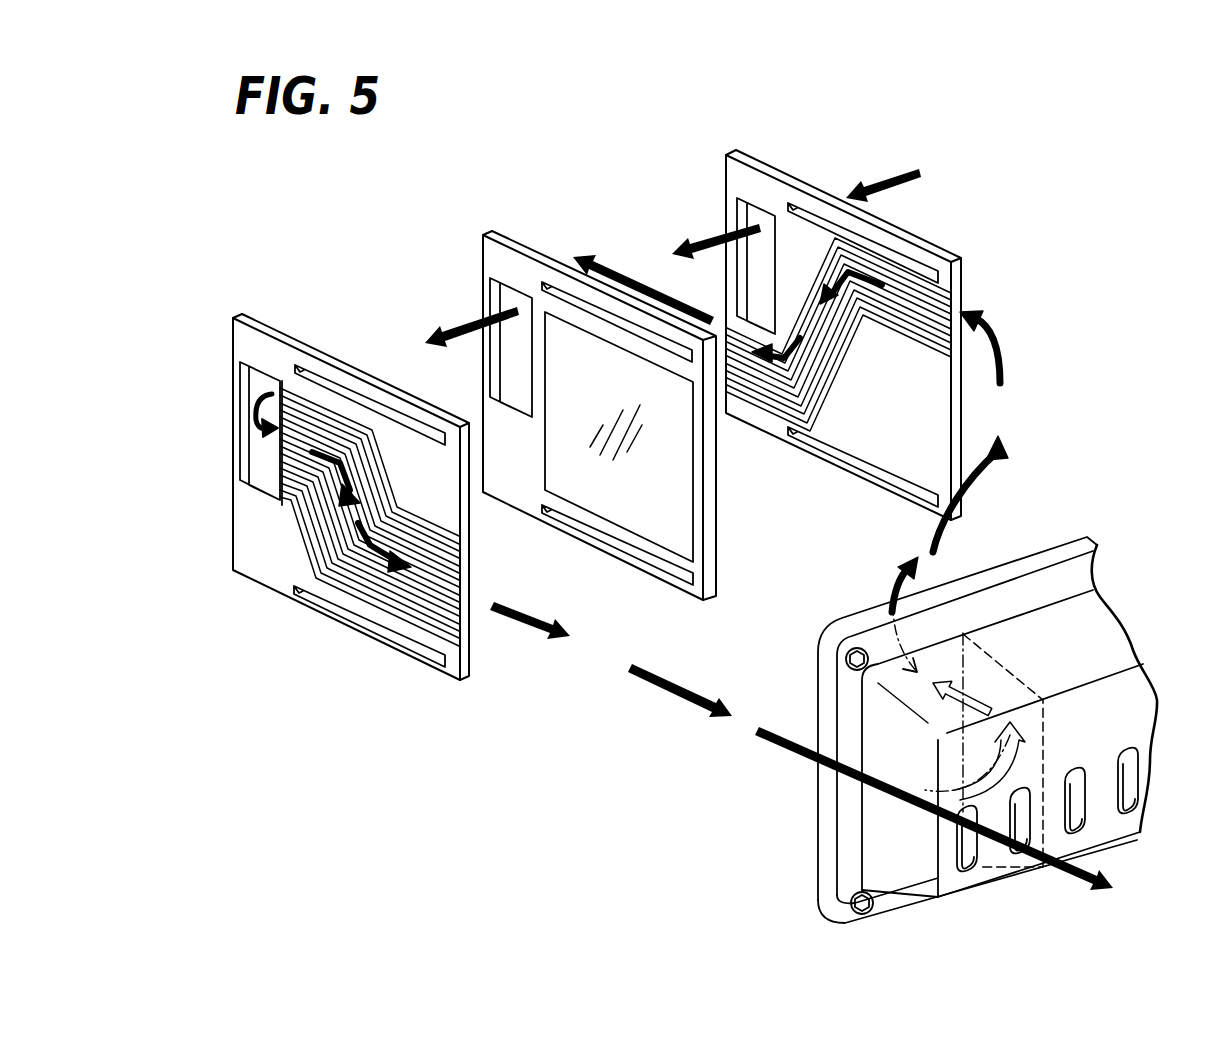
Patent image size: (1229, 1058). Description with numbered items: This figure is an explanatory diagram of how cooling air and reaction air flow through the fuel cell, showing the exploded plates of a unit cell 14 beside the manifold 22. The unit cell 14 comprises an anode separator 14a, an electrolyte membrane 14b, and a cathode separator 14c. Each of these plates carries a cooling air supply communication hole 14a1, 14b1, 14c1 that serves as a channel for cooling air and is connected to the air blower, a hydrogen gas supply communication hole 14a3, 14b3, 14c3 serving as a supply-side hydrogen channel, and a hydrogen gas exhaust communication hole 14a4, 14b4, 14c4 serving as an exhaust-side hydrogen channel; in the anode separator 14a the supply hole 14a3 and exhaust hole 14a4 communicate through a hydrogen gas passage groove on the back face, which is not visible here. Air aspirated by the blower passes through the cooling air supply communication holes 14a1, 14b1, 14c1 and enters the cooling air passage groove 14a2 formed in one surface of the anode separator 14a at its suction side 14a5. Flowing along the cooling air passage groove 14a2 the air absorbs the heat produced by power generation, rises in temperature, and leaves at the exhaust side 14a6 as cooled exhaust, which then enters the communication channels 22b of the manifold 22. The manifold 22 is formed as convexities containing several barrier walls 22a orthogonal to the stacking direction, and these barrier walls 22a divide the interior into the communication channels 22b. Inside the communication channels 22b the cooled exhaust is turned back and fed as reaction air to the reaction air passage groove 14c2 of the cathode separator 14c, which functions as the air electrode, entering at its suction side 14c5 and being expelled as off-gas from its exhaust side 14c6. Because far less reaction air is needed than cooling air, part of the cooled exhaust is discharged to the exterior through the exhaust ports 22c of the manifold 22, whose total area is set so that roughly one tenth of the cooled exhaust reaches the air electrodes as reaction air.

The unit cell 14 is at (790, 149).
The anode separator 14a is at (248, 341).
The cooling air supply communication hole 14a1 is at (256, 447).
The cooling air passage groove 14a2 is at (304, 533).
The hydrogen gas supply communication hole 14a3 is at (373, 631).
The hydrogen gas exhaust communication hole 14a4 is at (345, 386).
The suction side 14a5 is at (276, 470).
The exhaust side 14a6 is at (463, 641).
The electrolyte membrane 14b is at (502, 256).
The cooling air supply communication hole 14b1 is at (508, 300).
The hydrogen gas supply communication hole 14b3 is at (585, 532).
The hydrogen gas exhaust communication hole 14b4 is at (553, 282).
The cathode separator 14c is at (740, 177).
The cooling air supply communication hole 14c1 is at (753, 218).
The reaction air passage groove 14c2 is at (753, 404).
The hydrogen gas supply communication hole 14c3 is at (872, 474).
The hydrogen gas exhaust communication hole 14c4 is at (911, 257).
The suction side 14c5 is at (952, 297).
The exhaust side 14c6 is at (718, 321).
The manifold 22 is at (904, 910).
The barrier wall 22a is at (1022, 677).
The communication channel 22b is at (900, 724).
The exhaust port 22c is at (974, 871).